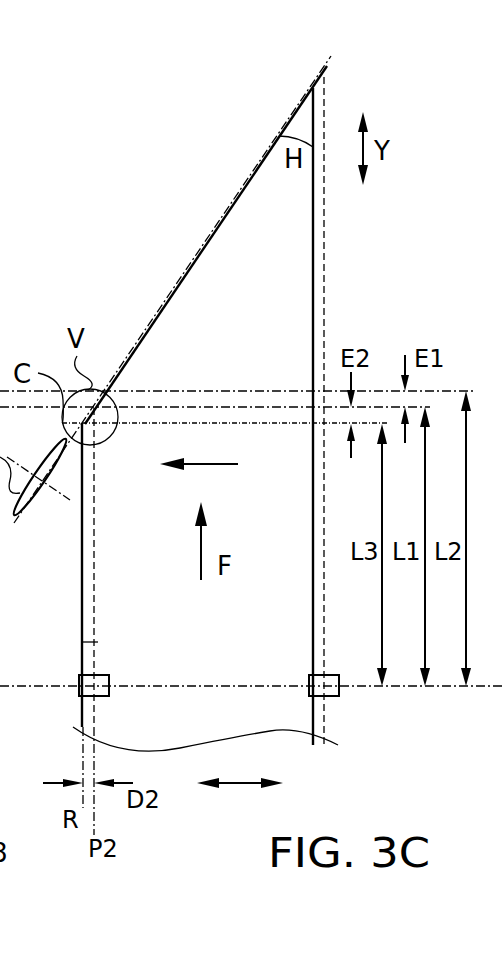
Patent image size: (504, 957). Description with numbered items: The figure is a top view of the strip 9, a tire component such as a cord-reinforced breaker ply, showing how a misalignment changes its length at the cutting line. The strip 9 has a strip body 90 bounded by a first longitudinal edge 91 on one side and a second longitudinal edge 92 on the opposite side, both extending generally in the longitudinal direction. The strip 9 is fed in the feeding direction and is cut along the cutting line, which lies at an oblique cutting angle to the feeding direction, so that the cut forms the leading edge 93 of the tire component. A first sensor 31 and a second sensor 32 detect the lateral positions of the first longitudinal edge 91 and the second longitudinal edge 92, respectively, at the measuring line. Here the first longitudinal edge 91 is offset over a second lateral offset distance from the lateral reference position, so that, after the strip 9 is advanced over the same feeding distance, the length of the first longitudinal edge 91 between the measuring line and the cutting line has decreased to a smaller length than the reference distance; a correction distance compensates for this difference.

The strip 9 is at (98, 642).
The first sensor 31 is at (78, 690).
The second sensor 32 is at (340, 694).
The strip body 90 is at (285, 651).
The first longitudinal edge 91 is at (82, 585).
The second longitudinal edge 92 is at (313, 490).
The leading edge 93 is at (183, 282).